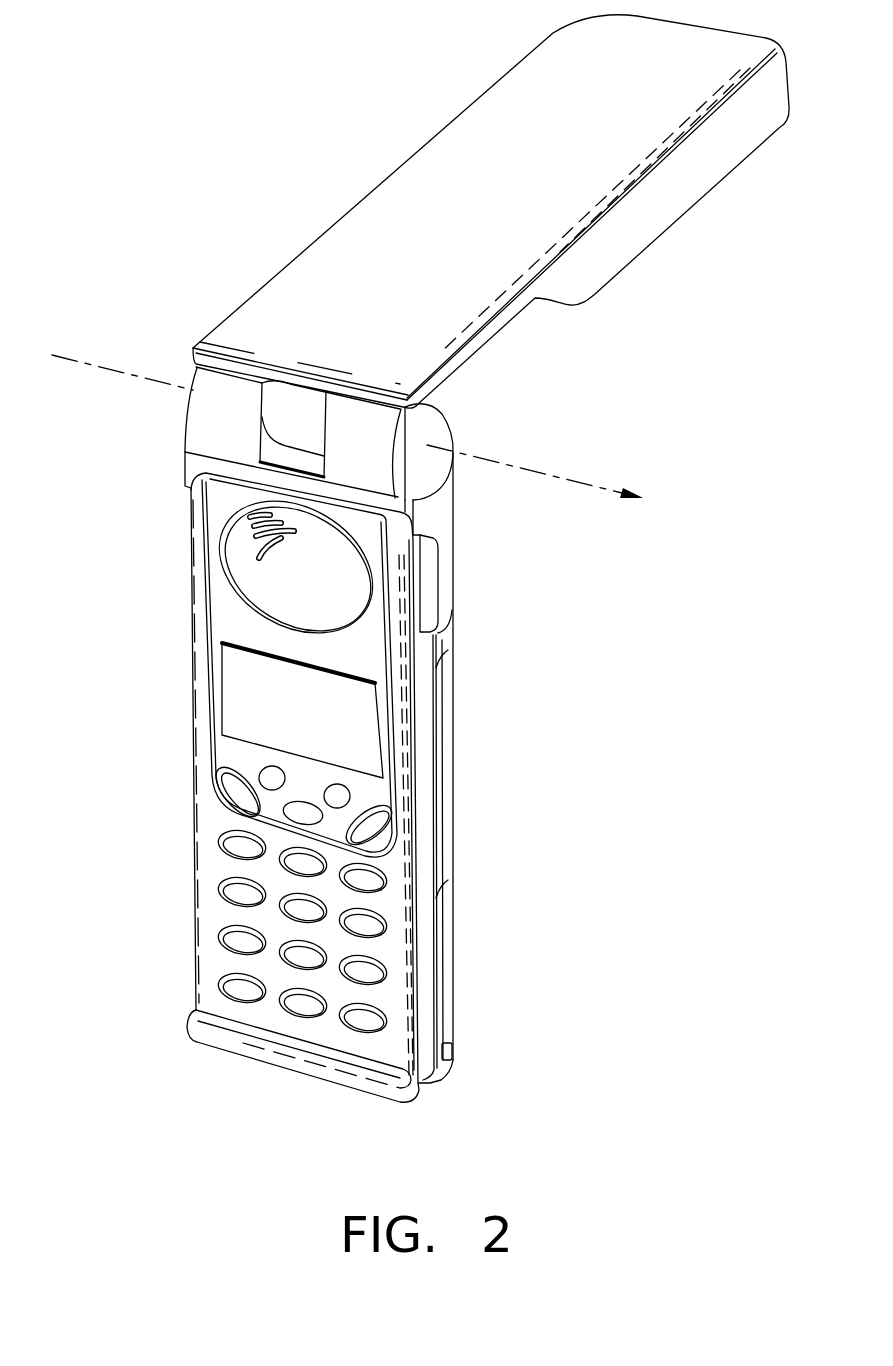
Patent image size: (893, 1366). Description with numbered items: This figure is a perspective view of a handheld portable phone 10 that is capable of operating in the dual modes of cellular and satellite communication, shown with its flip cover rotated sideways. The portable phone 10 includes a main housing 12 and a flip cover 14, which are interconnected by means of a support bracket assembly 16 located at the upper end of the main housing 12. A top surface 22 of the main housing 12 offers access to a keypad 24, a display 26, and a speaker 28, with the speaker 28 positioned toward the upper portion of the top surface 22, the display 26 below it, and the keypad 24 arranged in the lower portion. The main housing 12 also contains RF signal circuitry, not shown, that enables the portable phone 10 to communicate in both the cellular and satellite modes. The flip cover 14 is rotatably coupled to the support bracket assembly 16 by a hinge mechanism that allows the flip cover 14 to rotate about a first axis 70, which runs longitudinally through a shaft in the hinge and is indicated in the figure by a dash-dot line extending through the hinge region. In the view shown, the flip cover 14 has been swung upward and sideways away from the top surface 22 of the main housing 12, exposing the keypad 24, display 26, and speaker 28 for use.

The portable phone 10 is at (247, 230).
The main housing 12 is at (180, 771).
The flip cover 14 is at (410, 157).
The support bracket assembly 16 is at (453, 425).
The top surface 22 is at (210, 860).
The keypad 24 is at (200, 900).
The display 26 is at (237, 673).
The speaker 28 is at (240, 558).
The first axis 70 is at (577, 480).